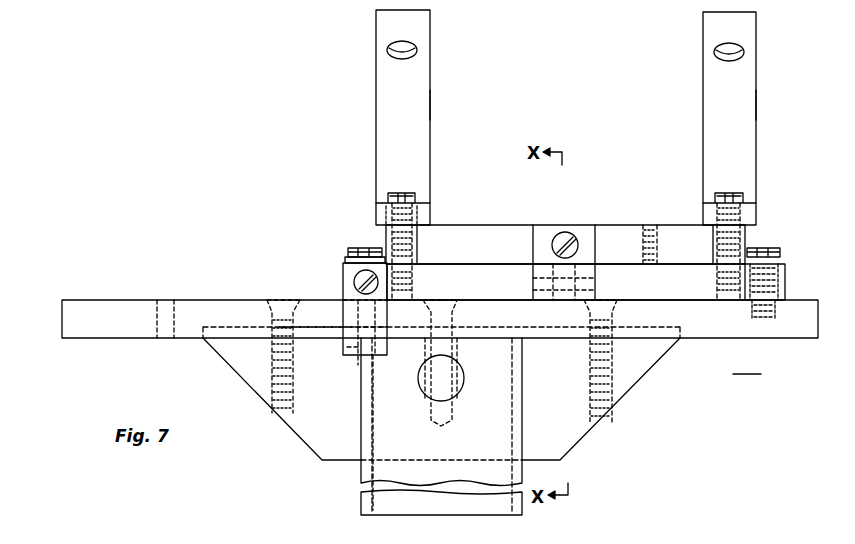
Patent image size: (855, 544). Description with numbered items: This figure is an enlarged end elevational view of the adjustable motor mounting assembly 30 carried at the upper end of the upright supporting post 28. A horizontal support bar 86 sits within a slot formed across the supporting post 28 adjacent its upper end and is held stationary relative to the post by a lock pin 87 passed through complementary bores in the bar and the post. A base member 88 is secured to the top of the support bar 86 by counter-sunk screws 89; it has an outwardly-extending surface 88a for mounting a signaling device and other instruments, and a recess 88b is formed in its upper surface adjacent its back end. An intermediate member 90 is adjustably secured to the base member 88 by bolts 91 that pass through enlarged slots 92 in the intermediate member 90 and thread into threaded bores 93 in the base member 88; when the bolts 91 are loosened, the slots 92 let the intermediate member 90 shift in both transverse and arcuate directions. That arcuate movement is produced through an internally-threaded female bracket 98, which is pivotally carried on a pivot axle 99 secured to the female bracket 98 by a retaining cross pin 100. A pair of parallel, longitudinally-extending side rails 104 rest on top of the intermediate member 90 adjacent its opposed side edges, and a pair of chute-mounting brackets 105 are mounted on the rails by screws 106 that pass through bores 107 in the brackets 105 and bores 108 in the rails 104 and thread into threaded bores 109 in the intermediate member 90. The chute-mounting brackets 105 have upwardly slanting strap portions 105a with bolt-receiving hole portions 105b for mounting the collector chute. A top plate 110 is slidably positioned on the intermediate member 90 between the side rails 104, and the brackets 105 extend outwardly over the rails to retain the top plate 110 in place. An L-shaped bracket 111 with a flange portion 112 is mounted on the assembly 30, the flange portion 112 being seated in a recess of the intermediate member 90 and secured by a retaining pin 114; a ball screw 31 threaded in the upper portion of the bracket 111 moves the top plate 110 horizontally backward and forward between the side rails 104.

The upright supporting post 28 is at (361, 477).
The adjustable motor mounting assembly 30 is at (747, 365).
The ball screw 31 is at (556, 233).
The horizontal support bar 86 is at (625, 396).
The lock pin 87 is at (465, 384).
The base member 88 is at (716, 340).
The outwardly-extending surface 88a is at (105, 303).
The recess 88b is at (343, 305).
The counter-sunk screws 89 is at (270, 298).
The intermediate member 90 is at (786, 276).
The bolts 91 is at (348, 252).
The enlarged slots 92 is at (779, 291).
The threaded bores 93 is at (769, 340).
The female bracket 98 is at (347, 272).
The pivot axle 99 is at (350, 346).
The retaining cross pin 100 is at (343, 278).
The side rails 104 is at (417, 236).
The chute-mounting brackets 105 is at (383, 205).
The upwardly slanting strap portions 105a is at (430, 104).
The bolt-receiving hole portions 105b is at (414, 45).
The screws 106 is at (416, 197).
The bores 107 is at (392, 220).
The bores 108 is at (386, 236).
The threaded bores 109 is at (412, 280).
The top plate 110 is at (620, 225).
The L-shaped bracket 111 is at (592, 225).
The flange portion 112 is at (596, 292).
The retaining pin 114 is at (533, 277).